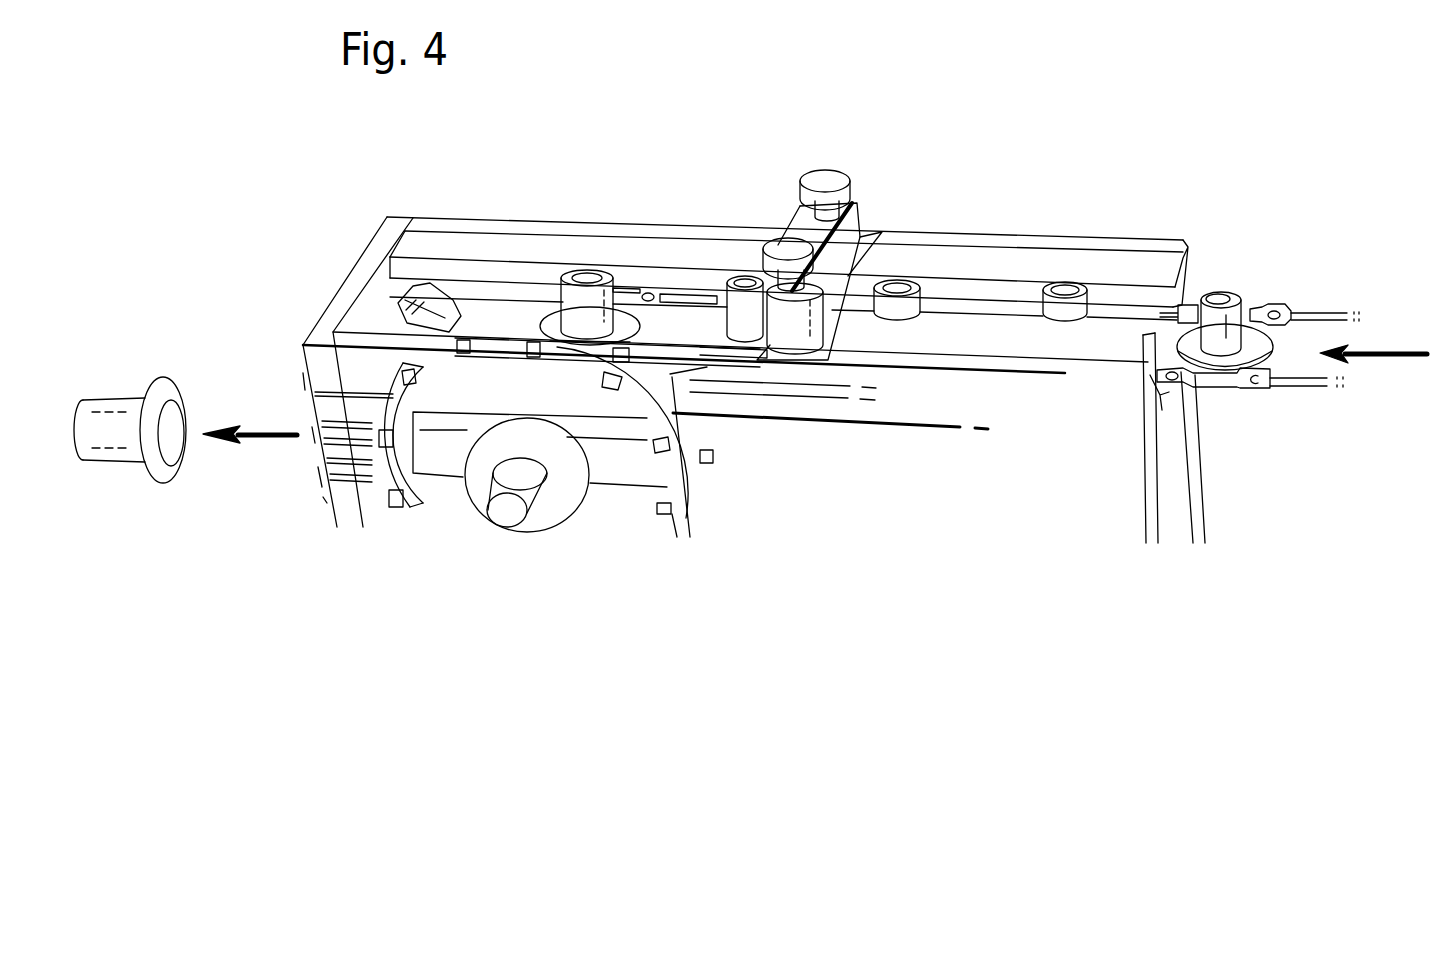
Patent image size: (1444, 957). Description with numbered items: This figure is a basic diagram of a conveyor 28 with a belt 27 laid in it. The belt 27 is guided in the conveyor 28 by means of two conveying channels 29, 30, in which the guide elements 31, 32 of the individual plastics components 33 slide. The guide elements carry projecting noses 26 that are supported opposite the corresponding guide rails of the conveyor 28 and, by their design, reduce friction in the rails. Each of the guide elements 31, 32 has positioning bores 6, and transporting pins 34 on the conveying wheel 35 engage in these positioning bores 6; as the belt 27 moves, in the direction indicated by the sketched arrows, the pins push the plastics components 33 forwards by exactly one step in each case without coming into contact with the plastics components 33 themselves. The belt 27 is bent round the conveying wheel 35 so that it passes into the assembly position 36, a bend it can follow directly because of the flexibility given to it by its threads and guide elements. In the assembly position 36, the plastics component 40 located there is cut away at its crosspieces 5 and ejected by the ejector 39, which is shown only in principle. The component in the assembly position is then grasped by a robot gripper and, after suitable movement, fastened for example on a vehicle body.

The crosspieces 5 is at (1195, 362).
The positioning bores 6 is at (650, 292).
The projecting noses 26 is at (1292, 308).
The belt 27 is at (1283, 294).
The conveyor 28 is at (1004, 506).
The conveying channel 29 is at (1192, 302).
The conveying channel 30 is at (1157, 387).
The guide element 31 is at (1255, 305).
The guide element 32 is at (1213, 388).
The plastics components 33 is at (582, 270).
The transporting pins 34 is at (413, 372).
The conveying wheel 35 is at (470, 387).
The assembly position 36 is at (314, 452).
The ejector 39 is at (617, 463).
The plastics component 40 is at (407, 478).